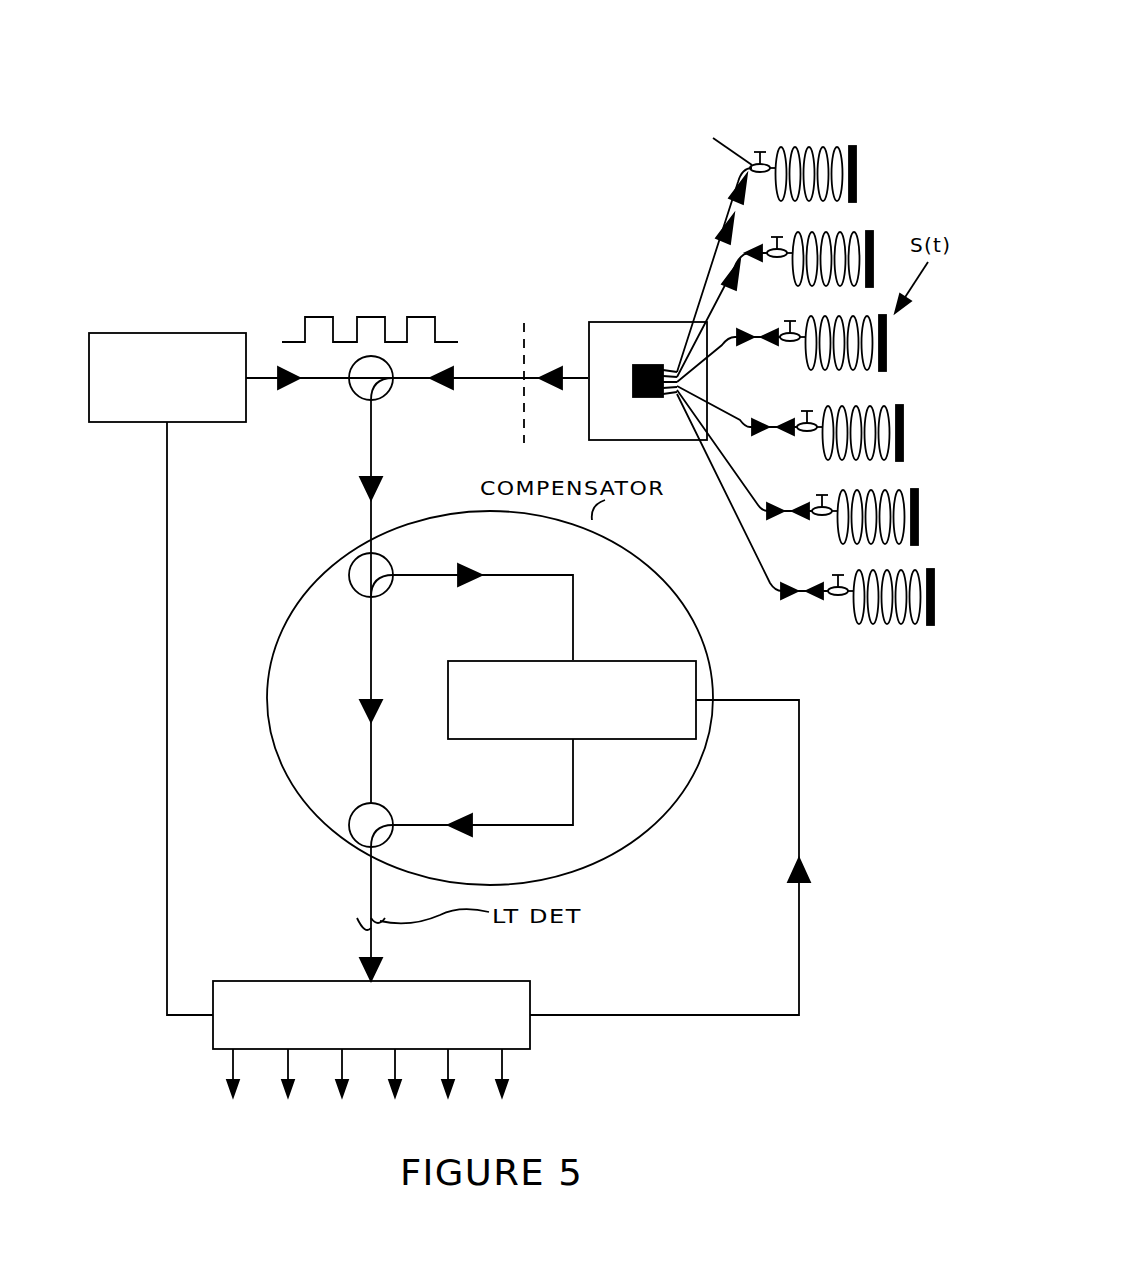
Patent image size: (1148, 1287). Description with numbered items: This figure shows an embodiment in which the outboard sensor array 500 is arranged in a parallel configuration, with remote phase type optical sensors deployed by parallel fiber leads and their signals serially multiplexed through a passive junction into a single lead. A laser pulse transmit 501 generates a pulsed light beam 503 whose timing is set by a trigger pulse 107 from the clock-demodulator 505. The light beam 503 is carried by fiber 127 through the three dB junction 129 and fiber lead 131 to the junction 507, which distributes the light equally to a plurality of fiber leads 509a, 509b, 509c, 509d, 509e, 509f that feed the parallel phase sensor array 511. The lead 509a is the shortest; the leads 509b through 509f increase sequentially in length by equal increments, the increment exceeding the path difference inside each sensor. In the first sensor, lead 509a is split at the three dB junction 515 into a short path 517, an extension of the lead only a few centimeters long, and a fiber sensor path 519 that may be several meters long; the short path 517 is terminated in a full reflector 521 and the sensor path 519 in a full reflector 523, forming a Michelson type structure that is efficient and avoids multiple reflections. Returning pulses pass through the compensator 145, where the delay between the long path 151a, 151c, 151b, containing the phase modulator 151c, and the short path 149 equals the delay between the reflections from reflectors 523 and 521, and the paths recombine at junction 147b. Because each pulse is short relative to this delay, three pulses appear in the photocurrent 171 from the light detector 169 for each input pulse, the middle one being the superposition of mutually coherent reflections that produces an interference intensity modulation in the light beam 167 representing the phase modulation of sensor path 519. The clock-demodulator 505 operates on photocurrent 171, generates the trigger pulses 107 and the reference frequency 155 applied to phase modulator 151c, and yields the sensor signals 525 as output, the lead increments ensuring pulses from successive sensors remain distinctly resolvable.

The laser pulse transmit 501 is at (138, 422).
The pulsed light beam 503 is at (392, 315).
The junction 507 is at (603, 322).
The fiber lead 509a is at (700, 282).
The fiber lead 509b is at (745, 262).
The fiber lead 509c is at (725, 343).
The fiber lead 509d is at (745, 430).
The fiber lead 509e is at (762, 513).
The fiber lead 509f is at (778, 590).
The parallel phase sensor array 511 is at (855, 116).
The 3 dB junction 515 is at (760, 172).
The short path 517 is at (706, 142).
The fiber sensor path 519 is at (826, 135).
The full reflector 521 is at (762, 153).
The full reflector 523 is at (862, 175).
The array 500 is at (878, 676).
The fiber 127 is at (330, 380).
The 3 dB junction 129 is at (385, 392).
The fiber lead 131 is at (470, 379).
The compensator 145 is at (349, 580).
The junction 147b is at (350, 810).
The short path 149 is at (370, 745).
The long path 151a is at (575, 592).
The long path 151b is at (545, 826).
The phase modulator 151c is at (640, 661).
The reference frequency 155 is at (803, 845).
The light beam 167 is at (371, 898).
The light detector 169 is at (365, 928).
The photocurrent 171 is at (374, 949).
The trigger pulse 107 is at (167, 877).
The clock-demodulator 505 is at (530, 992).
The sensor signals 525 is at (437, 1086).